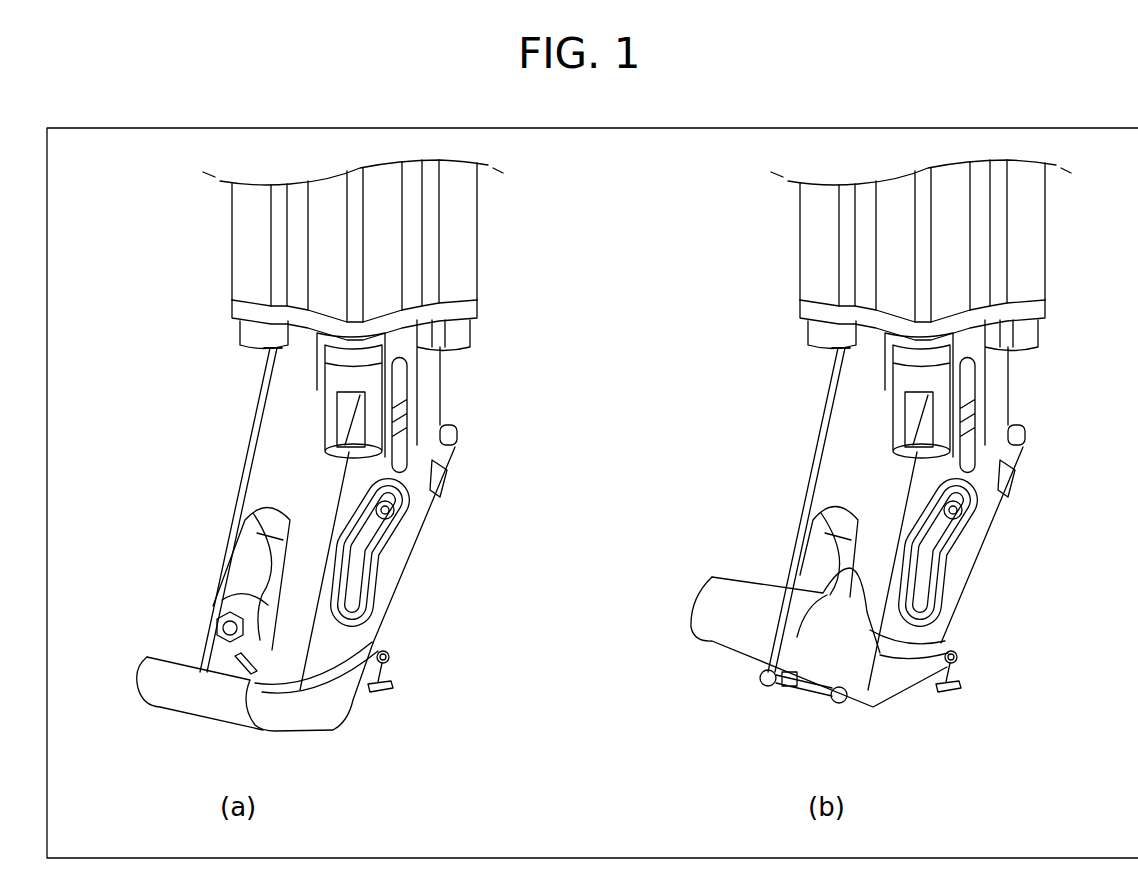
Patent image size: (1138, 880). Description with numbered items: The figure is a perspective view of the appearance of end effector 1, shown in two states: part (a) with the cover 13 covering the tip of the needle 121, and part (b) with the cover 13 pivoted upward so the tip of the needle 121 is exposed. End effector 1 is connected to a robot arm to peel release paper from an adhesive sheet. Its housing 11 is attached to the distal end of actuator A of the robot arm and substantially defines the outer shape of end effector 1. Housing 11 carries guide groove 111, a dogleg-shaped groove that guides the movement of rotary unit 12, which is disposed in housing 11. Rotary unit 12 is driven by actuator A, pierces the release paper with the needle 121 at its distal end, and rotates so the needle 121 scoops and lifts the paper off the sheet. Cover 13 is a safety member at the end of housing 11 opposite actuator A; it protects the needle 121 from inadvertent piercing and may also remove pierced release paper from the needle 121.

The end effector 1 is at (222, 373).
The housing 11 is at (270, 462).
The guide groove 111 is at (395, 545).
The rotary unit 12 is at (260, 590).
The needle 121 is at (220, 657).
The cover 13 is at (163, 695).
The actuator A is at (453, 225).